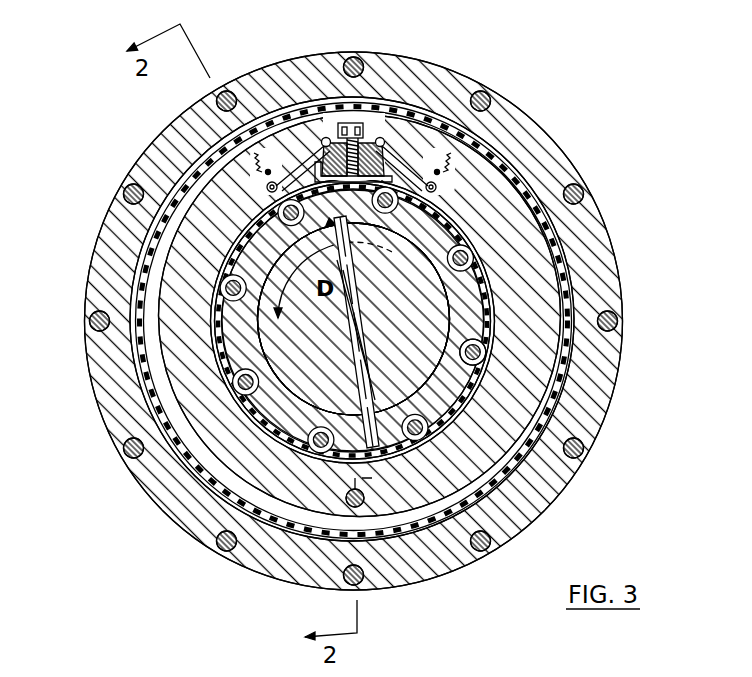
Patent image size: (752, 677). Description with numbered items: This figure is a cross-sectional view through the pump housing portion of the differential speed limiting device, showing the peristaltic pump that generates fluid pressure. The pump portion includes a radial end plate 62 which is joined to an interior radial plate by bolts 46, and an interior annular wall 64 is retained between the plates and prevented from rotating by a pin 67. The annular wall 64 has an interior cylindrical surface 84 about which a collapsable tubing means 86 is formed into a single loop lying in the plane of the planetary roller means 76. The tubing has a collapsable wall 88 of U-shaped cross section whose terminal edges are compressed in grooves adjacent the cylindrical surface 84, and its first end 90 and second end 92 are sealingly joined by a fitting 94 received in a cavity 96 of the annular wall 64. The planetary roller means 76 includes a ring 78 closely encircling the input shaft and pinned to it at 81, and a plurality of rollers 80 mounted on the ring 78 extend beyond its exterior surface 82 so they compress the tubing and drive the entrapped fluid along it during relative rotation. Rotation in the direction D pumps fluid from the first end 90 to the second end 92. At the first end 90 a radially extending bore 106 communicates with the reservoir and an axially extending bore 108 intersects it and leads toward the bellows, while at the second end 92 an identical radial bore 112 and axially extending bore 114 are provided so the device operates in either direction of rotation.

The bolts 46 is at (620, 320).
The radial end plate 62 is at (597, 360).
The interior annular wall 64 is at (543, 317).
The pin 67 is at (348, 504).
The planetary roller means 76 is at (450, 388).
The ring 78 is at (480, 371).
The rollers 80 is at (338, 441).
The pin 81 is at (376, 440).
The exterior surface 82 is at (232, 372).
The interior cylindrical surface 84 is at (213, 353).
The collapsable tubing means 86 is at (505, 321).
The collapsable wall 88 is at (490, 295).
The first end 90 is at (315, 177).
The second end 92 is at (415, 178).
The fitting 94 is at (364, 140).
The cavity 96 is at (337, 143).
The radially extending bore 106 is at (274, 165).
The axially extending bore 108 is at (268, 184).
The radial bore 112 is at (441, 172).
The axially extending bore 114 is at (432, 187).